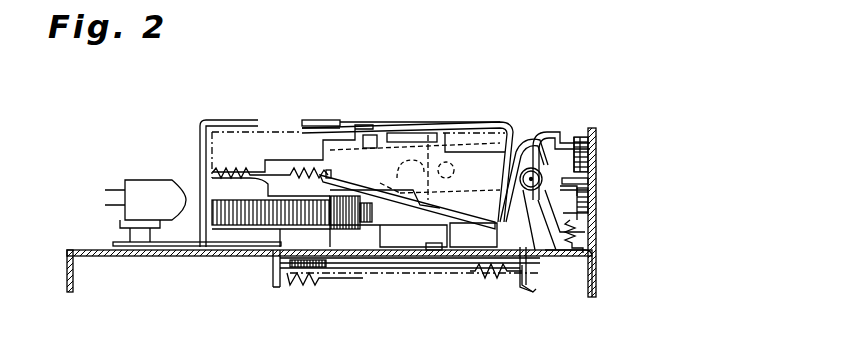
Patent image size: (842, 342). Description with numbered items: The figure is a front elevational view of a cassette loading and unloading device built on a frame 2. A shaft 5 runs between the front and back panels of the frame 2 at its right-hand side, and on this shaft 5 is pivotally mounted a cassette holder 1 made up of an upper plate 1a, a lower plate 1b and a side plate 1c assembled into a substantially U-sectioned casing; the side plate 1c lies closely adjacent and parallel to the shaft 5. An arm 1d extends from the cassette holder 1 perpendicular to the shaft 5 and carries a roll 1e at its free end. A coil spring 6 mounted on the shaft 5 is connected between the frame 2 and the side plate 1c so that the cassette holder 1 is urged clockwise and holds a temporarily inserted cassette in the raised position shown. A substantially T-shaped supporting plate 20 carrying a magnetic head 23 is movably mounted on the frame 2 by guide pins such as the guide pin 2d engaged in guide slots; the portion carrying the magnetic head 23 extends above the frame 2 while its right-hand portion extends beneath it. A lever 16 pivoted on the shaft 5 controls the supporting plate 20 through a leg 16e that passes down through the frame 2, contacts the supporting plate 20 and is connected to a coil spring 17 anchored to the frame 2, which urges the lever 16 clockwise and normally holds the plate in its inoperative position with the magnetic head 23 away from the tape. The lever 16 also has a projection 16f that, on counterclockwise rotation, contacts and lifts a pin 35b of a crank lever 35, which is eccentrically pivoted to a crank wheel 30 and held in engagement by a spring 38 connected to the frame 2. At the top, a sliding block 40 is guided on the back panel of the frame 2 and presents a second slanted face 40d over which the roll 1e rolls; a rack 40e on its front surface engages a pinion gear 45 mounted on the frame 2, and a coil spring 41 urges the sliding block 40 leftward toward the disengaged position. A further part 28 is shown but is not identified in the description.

The cassette holder 1 is at (513, 130).
The upper plate 1a is at (480, 124).
The lower plate 1b is at (418, 212).
The side plate 1c is at (474, 219).
The arm 1d is at (436, 160).
The roll 1e is at (390, 193).
The frame 2 is at (69, 265).
The guide pin 2d is at (431, 266).
The shaft 5 is at (524, 192).
The coil spring 6 is at (545, 252).
The lever 16 is at (540, 150).
The leg 16e is at (536, 291).
The projection 16f is at (592, 190).
The coil spring 17 is at (488, 278).
The supporting plate 20 is at (160, 248).
The magnetic head 23 is at (160, 188).
The frame plate 28 is at (598, 122).
The crank wheel 30 is at (592, 155).
The crank lever 35 is at (592, 172).
The pin 35b is at (582, 185).
The spring 38 is at (570, 233).
The sliding block 40 is at (295, 168).
The second slanted face 40d is at (402, 178).
The rack 40e is at (241, 230).
The coil spring 41 is at (228, 168).
The pinion gear 45 is at (335, 250).